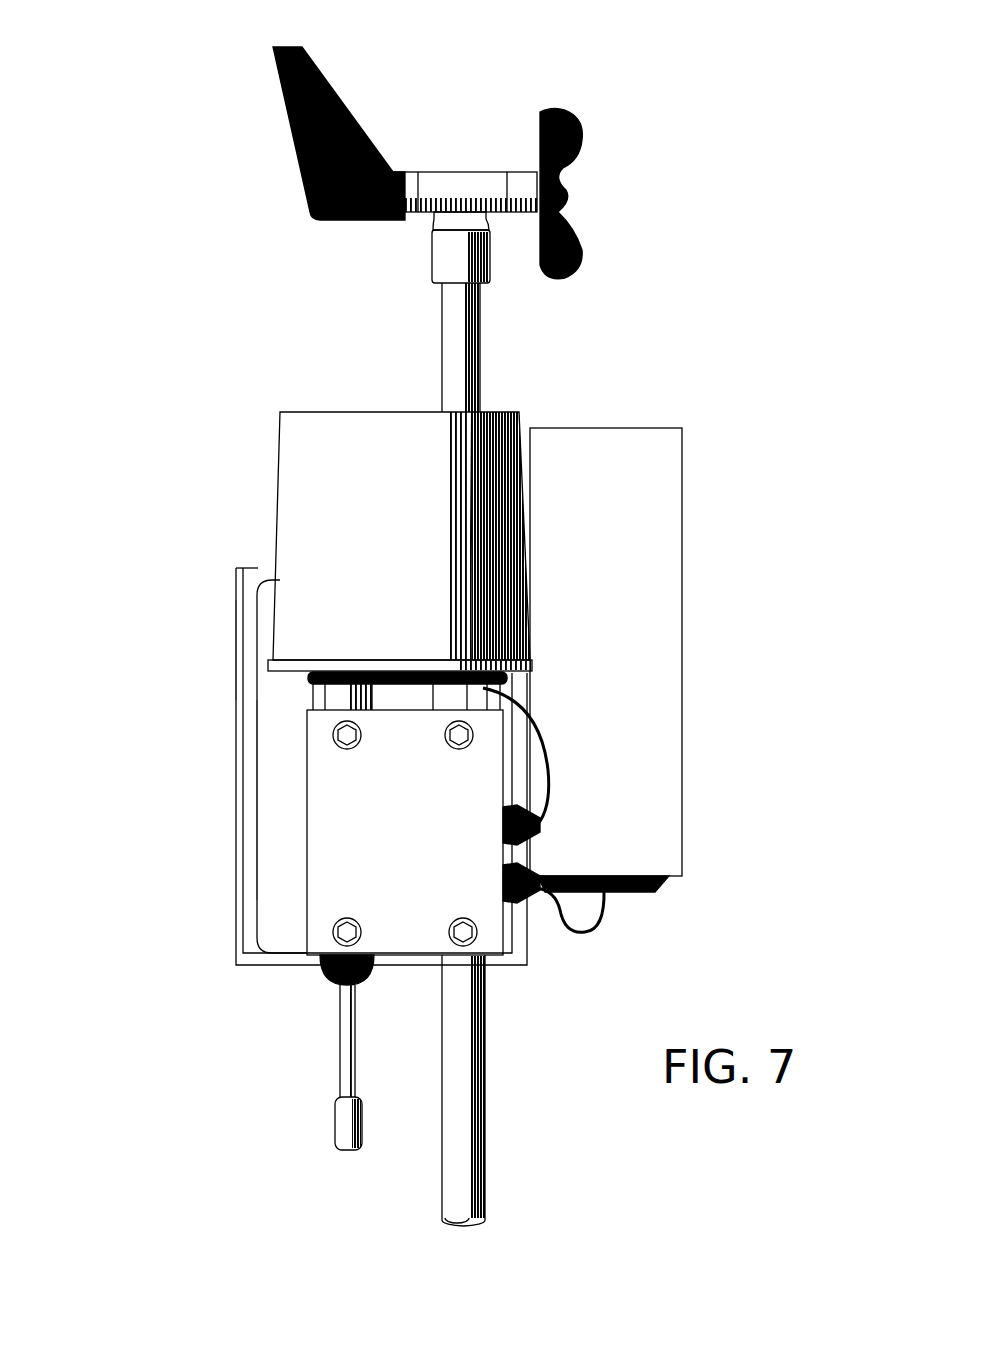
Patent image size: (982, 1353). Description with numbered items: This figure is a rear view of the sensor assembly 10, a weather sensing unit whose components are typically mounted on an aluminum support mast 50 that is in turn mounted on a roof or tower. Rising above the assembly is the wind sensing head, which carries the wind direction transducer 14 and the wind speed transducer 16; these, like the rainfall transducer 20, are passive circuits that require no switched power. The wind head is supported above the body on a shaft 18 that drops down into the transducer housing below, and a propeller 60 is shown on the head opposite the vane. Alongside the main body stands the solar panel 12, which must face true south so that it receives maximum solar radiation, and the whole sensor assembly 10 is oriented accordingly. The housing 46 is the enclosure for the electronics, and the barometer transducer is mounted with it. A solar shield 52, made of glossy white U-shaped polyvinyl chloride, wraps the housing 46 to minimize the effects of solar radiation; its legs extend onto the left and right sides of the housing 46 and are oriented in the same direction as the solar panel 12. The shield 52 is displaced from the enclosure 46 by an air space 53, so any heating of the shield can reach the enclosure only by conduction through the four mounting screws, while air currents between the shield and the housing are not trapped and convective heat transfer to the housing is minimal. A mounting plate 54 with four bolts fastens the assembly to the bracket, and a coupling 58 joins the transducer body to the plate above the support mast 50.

The sensor assembly 10 is at (718, 291).
The solar panel 12 is at (650, 514).
The wind direction transducer 14 is at (490, 282).
The wind speed transducer 16 is at (442, 163).
The sensor shaft 18 is at (455, 353).
The rainfall transducer 20 is at (323, 463).
The housing 46 is at (253, 585).
The support mast 50 is at (463, 1033).
The solar shield 52 is at (233, 670).
The air space 53 is at (250, 802).
The mounting plate 54 is at (347, 870).
The coupling ring 58 is at (317, 680).
The propeller 60 is at (578, 240).